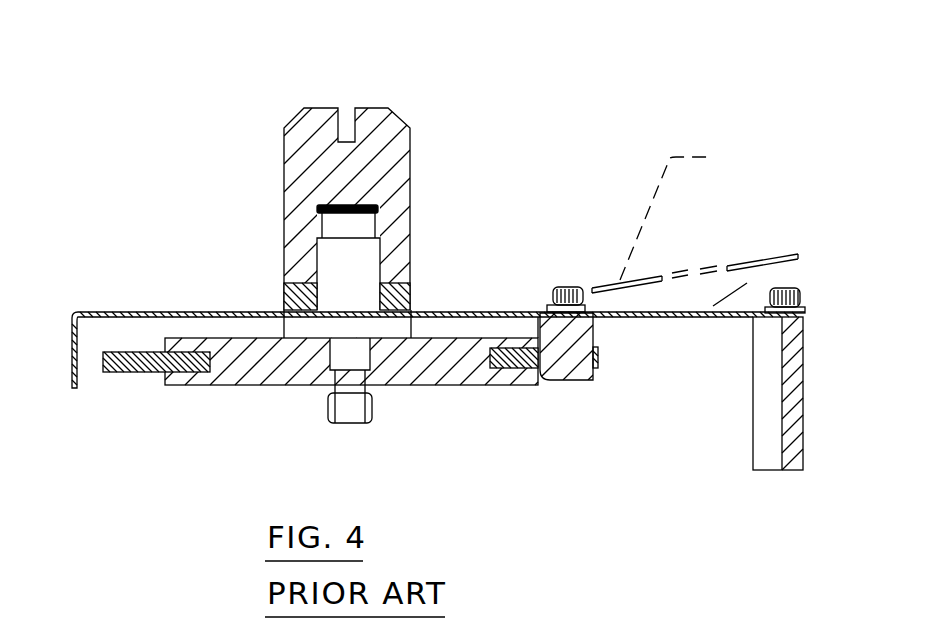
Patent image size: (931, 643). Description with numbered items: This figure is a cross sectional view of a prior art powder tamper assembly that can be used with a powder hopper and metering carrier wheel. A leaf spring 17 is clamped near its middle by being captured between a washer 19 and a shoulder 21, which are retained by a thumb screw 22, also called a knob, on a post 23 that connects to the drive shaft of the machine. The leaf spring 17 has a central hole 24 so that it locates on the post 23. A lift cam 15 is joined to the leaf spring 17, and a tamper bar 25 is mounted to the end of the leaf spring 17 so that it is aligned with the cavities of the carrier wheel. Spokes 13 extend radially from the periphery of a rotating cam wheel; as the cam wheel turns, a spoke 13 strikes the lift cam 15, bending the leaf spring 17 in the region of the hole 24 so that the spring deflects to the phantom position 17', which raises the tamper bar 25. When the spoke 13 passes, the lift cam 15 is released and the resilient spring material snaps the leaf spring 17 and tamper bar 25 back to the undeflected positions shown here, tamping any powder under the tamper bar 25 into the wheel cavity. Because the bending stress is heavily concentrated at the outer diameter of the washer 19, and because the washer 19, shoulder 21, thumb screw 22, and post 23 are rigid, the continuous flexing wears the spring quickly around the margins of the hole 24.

The spokes 13 is at (132, 362).
The lift cam 15 is at (568, 330).
The leaf spring 17 is at (742, 279).
The phantom position of leaf spring 17' is at (683, 213).
The washer 19 is at (410, 290).
The shoulder 21 is at (300, 324).
The thumb screw 22 is at (392, 133).
The post 23 is at (317, 243).
The central hole 24 is at (380, 308).
The tamper bar 25 is at (770, 396).